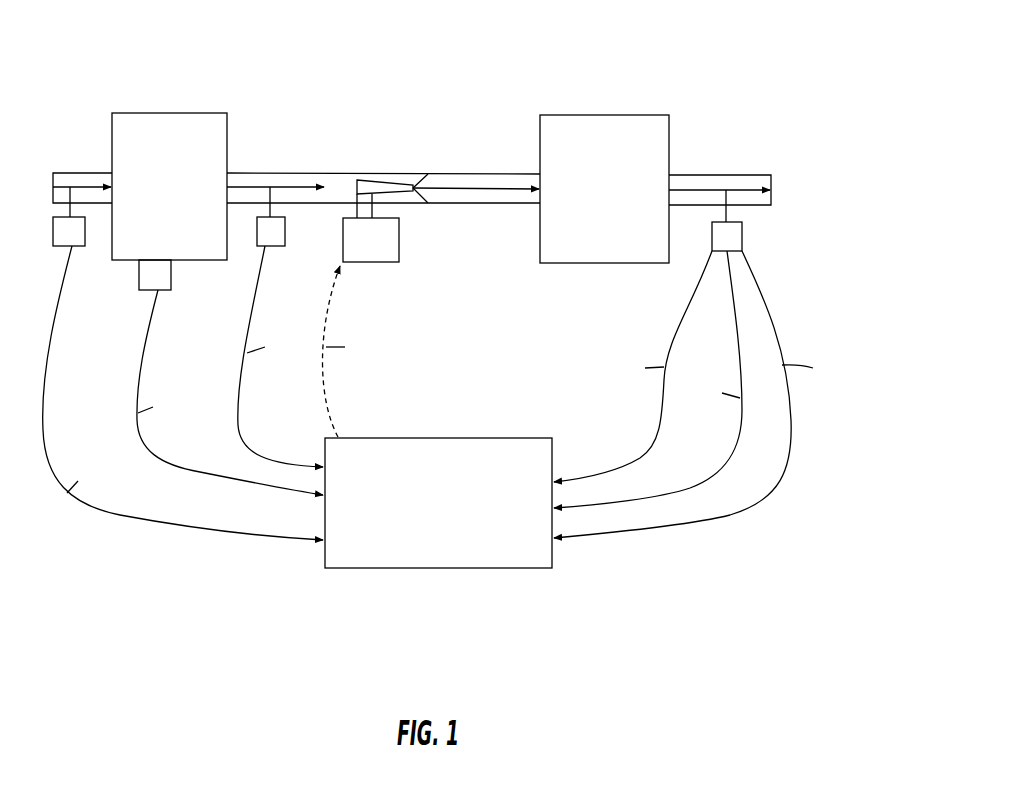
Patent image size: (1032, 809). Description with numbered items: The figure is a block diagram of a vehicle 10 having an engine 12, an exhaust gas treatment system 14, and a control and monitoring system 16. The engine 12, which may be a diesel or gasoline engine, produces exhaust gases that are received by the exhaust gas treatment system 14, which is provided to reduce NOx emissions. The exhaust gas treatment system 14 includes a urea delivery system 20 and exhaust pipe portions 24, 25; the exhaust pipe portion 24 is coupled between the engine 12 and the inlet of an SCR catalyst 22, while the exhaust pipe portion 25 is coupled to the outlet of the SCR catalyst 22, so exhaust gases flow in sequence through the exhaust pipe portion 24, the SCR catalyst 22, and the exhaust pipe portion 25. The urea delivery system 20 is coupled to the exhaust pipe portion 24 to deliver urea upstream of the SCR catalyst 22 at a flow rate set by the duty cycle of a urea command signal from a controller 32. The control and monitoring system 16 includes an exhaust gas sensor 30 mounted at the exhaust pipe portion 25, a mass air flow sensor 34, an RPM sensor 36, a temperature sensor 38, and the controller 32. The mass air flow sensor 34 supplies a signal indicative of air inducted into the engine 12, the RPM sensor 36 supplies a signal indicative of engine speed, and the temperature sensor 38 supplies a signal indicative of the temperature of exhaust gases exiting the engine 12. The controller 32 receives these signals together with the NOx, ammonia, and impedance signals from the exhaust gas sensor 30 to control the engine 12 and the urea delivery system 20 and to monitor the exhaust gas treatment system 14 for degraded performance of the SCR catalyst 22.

The vehicle 10 is at (521, 66).
The engine 12 is at (228, 112).
The exhaust gas treatment system 14 is at (375, 76).
The control and monitoring system 16 is at (823, 435).
The urea delivery system 20 is at (380, 180).
The SCR catalyst 22 is at (674, 114).
The exhaust pipe portion 24 is at (265, 172).
The exhaust pipe portion 25 is at (741, 172).
The exhaust gas sensor 30 is at (745, 251).
The controller 32 is at (438, 570).
The mass air flow sensor 34 is at (83, 247).
The RPM sensor 36 is at (172, 291).
The temperature sensor 38 is at (285, 249).